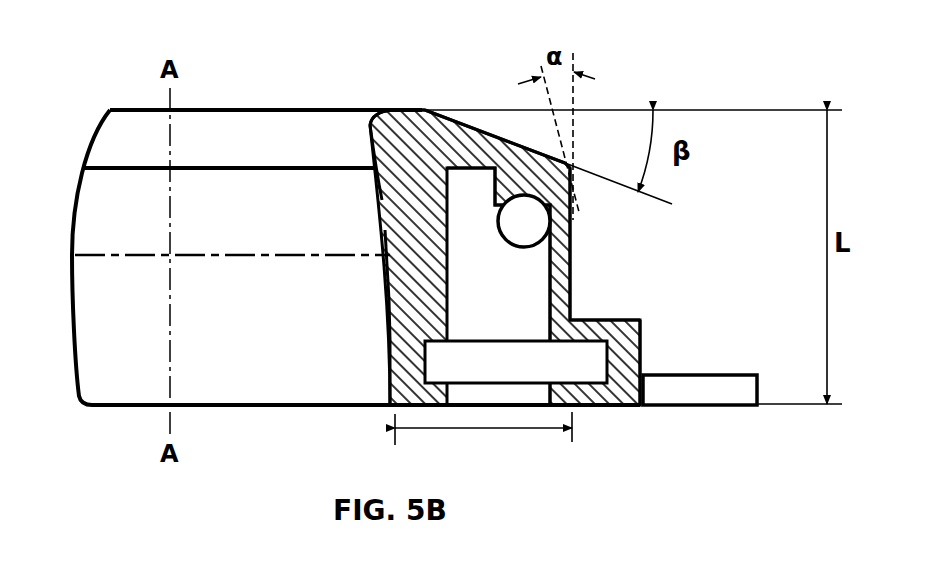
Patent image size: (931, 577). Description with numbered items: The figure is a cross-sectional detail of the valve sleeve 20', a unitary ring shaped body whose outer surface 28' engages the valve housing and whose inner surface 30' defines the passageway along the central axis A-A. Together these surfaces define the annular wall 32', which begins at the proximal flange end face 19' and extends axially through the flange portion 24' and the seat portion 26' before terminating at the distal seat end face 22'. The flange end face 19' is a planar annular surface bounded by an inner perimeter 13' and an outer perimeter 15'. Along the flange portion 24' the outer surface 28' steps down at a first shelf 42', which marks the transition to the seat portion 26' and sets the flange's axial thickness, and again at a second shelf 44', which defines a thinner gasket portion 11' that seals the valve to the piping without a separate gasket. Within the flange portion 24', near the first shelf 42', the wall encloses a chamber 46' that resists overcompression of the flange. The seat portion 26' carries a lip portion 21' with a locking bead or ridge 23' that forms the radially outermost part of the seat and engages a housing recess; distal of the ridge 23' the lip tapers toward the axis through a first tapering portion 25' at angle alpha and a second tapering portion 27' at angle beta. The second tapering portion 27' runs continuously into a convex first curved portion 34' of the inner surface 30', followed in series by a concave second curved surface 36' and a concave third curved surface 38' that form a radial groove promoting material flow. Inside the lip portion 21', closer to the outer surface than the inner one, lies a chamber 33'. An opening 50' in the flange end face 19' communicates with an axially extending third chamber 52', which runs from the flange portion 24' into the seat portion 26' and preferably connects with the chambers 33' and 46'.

The valve sleeve 20' is at (532, 209).
The gasket portion 11' is at (398, 467).
The inner perimeter 13' is at (346, 403).
The outer perimeter 15' is at (797, 433).
The flange end face 19' is at (607, 442).
The lip portion 21' is at (606, 220).
The seat end face 22' is at (426, 93).
The locking bead or ridge 23' is at (639, 250).
The flange portion 24' is at (671, 360).
The first tapering portion 25' is at (601, 167).
The seat portion 26' is at (610, 280).
The second tapering portion 27' is at (507, 98).
The outer surface 28' is at (640, 303).
The inner surface 30' is at (354, 334).
The annular wall 32' is at (415, 72).
The chamber 33' is at (436, 257).
The first curved portion 34' is at (333, 83).
The second curved surface 36' is at (342, 162).
The third curved surface 38' is at (347, 259).
The first shelf 42' is at (686, 305).
The second shelf 44' is at (735, 363).
The chamber 46' is at (516, 362).
The opening 50' is at (483, 482).
The third chamber 52' is at (498, 286).